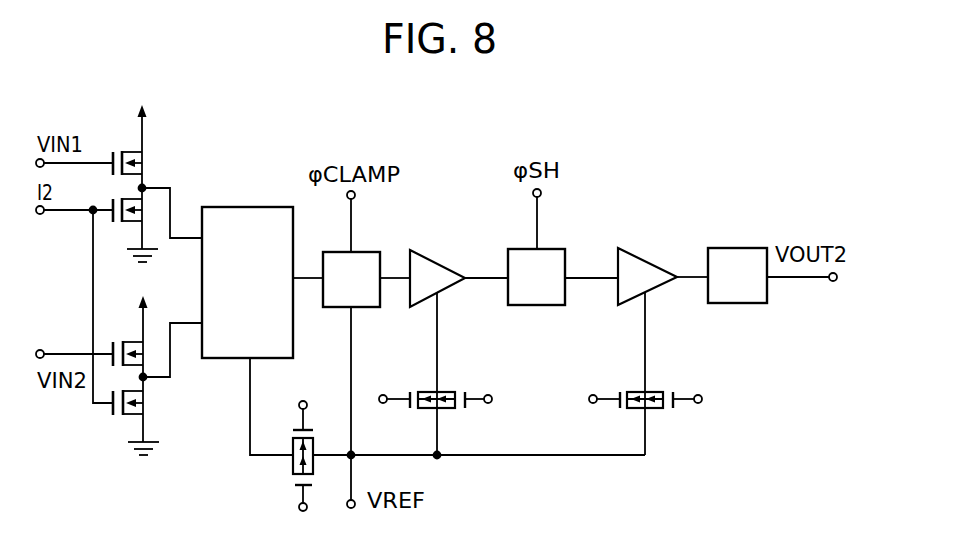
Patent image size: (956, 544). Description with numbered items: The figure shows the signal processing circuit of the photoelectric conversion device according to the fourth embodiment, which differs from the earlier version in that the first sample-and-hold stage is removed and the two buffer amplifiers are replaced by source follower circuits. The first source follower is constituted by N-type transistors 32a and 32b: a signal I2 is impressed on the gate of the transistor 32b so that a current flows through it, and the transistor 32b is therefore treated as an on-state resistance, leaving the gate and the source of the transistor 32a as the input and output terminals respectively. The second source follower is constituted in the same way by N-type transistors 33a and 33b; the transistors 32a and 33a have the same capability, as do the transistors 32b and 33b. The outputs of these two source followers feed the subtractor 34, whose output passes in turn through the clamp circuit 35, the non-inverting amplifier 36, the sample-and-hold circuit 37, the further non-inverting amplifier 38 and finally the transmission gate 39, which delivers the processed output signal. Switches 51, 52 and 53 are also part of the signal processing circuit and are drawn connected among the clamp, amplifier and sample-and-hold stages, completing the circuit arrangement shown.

The N-type transistor 32a is at (147, 152).
The N-type transistor 32b is at (147, 208).
The N-type transistor 33a is at (121, 335).
The N-type transistor 33b is at (148, 402).
The subtractor 34 is at (237, 207).
The clamp circuit 35 is at (365, 252).
The non-inverting amplifier 36 is at (440, 260).
The sample-and-hold circuit 37 is at (552, 249).
The non-inverting amplifier 38 is at (638, 250).
The transmission gate 39 is at (735, 248).
The switch 51 is at (292, 463).
The switch 52 is at (445, 410).
The switch 53 is at (637, 410).